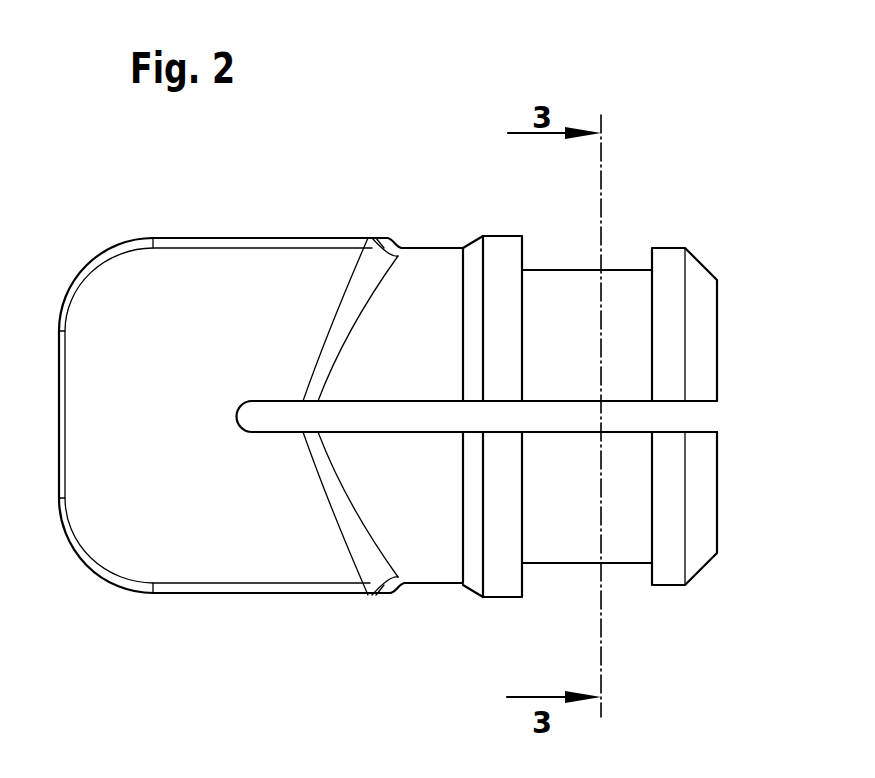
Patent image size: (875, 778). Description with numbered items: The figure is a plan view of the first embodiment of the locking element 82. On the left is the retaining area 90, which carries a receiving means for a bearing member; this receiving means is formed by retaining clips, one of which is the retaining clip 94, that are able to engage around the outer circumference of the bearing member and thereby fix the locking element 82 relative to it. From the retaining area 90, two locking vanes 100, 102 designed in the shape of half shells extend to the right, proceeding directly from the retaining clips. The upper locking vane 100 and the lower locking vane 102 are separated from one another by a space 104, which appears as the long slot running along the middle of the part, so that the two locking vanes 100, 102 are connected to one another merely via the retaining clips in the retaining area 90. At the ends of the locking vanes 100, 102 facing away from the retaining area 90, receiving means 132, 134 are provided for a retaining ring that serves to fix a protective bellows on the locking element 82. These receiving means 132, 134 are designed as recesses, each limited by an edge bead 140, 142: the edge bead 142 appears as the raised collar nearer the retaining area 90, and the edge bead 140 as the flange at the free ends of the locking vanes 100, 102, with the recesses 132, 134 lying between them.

The locking element 82 is at (271, 389).
The retaining area 90 is at (232, 552).
The retaining clip 94 is at (180, 538).
The locking vane 100 is at (666, 240).
The locking vane 102 is at (670, 594).
The space 104 is at (667, 403).
The receiving means 132 is at (571, 296).
The receiving means 134 is at (570, 520).
The edge bead 140 is at (668, 318).
The edge bead 142 is at (500, 252).